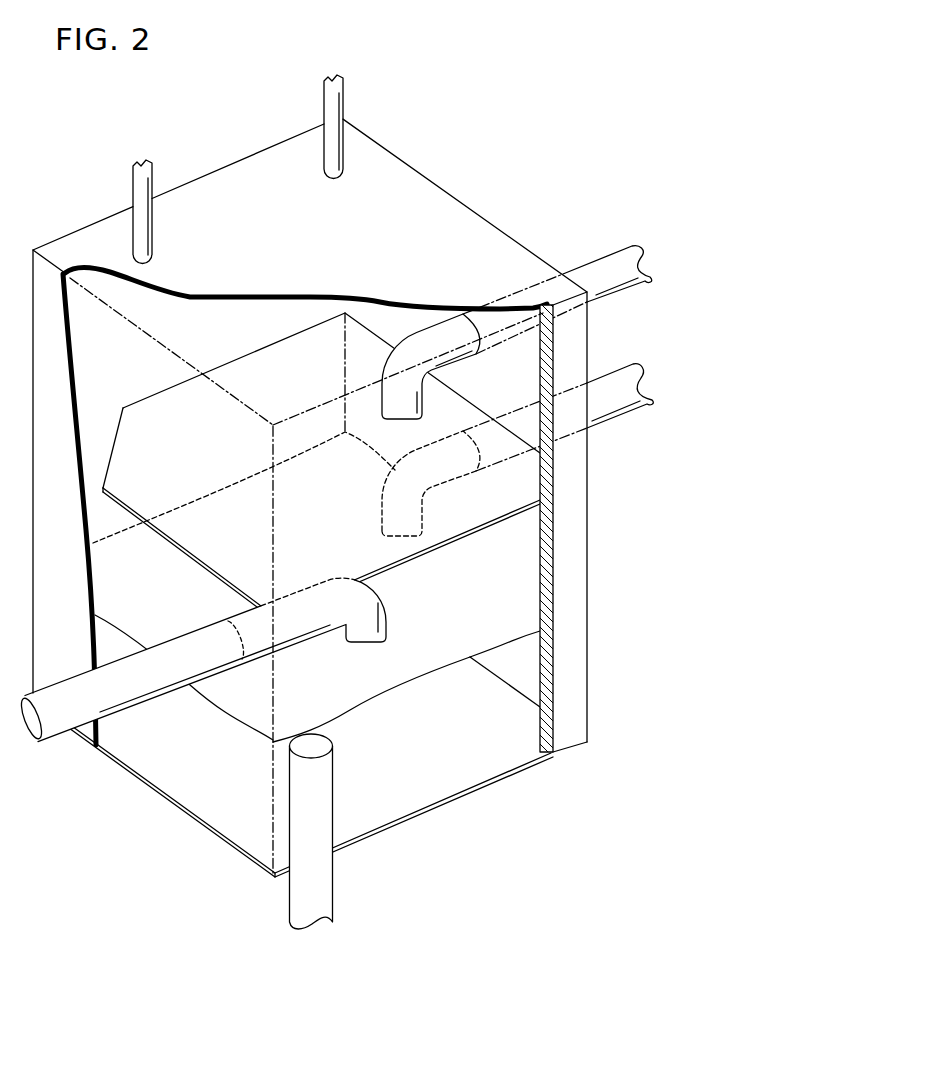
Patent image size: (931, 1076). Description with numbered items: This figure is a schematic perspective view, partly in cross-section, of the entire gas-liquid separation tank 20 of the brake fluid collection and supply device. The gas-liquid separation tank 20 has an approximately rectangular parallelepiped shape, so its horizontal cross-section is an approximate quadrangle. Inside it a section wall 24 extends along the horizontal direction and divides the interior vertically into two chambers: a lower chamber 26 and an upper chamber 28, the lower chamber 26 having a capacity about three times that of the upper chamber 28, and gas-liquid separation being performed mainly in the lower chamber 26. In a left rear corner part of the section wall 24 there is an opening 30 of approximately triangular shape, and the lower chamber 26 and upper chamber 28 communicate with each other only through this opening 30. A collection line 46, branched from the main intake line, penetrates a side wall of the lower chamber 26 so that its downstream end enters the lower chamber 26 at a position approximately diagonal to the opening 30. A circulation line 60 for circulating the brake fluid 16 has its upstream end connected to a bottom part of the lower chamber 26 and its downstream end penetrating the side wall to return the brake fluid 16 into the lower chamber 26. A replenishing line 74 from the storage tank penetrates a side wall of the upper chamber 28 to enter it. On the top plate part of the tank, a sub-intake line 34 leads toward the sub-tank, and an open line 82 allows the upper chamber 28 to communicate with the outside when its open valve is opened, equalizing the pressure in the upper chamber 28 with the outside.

The brake fluid 16 is at (490, 742).
The gas-liquid separation tank 20 is at (422, 167).
The section wall 24 is at (291, 345).
The lower chamber 26 is at (527, 550).
The upper chamber 28 is at (194, 312).
The opening 30 is at (99, 454).
The sub-intake line 34 is at (326, 104).
The collection line 46 is at (155, 680).
The circulation line 60 is at (613, 400).
The replenishing line 74 is at (595, 265).
The open line 82 is at (138, 190).